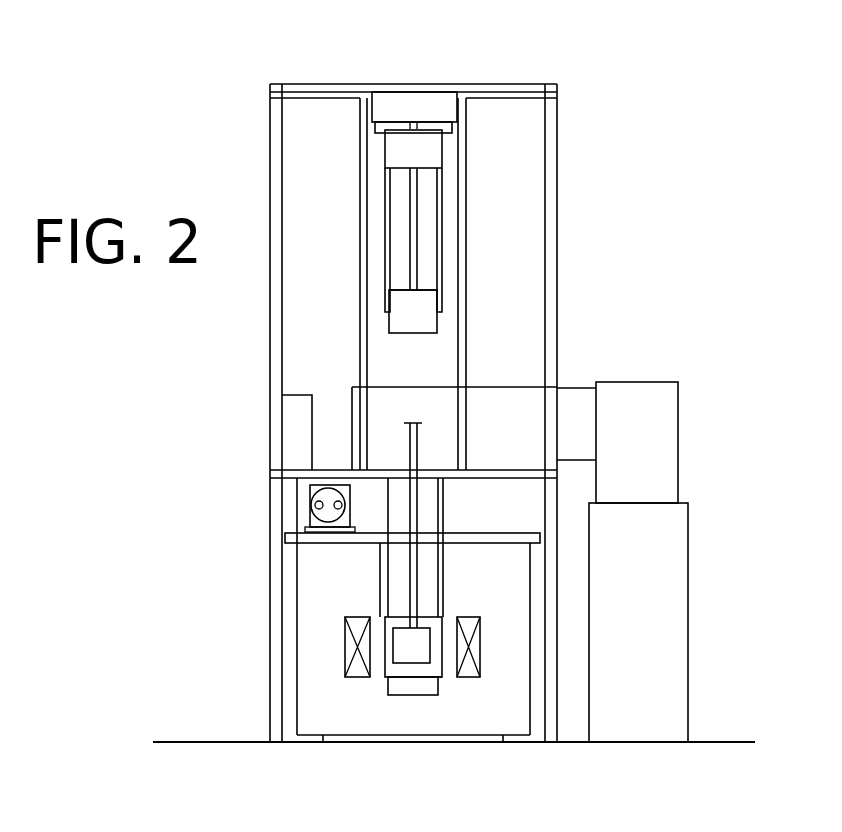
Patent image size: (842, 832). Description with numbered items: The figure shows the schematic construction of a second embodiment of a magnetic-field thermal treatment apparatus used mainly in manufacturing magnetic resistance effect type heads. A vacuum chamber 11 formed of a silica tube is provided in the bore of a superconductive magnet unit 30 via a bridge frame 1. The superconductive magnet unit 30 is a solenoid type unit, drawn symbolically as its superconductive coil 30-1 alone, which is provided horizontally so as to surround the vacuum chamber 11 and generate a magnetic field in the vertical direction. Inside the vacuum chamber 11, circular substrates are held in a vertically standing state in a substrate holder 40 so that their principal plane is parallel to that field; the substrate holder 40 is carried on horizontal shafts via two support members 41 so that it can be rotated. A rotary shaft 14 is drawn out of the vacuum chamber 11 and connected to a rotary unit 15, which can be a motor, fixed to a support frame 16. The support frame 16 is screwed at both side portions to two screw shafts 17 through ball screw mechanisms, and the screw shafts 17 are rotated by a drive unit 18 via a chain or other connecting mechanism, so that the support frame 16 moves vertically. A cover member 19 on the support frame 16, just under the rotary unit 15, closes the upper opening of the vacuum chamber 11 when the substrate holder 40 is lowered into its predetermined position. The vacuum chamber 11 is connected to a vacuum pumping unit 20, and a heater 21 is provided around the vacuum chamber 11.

The bridge frame 1 is at (278, 475).
The vacuum chamber 11 is at (410, 695).
The rotary shaft 14 is at (418, 237).
The rotary unit 15 is at (430, 102).
The support frame 16 is at (523, 97).
The screw shafts 17 is at (362, 195).
The drive unit 18 is at (297, 422).
The cover member 19 is at (447, 128).
The vacuum pumping unit 20 is at (678, 435).
The heater 21 is at (442, 677).
The superconductive magnet unit 30 is at (311, 586).
The superconductive coil 30-1 is at (343, 648).
The substrate holder 40 is at (397, 322).
The support members 41 is at (387, 255).